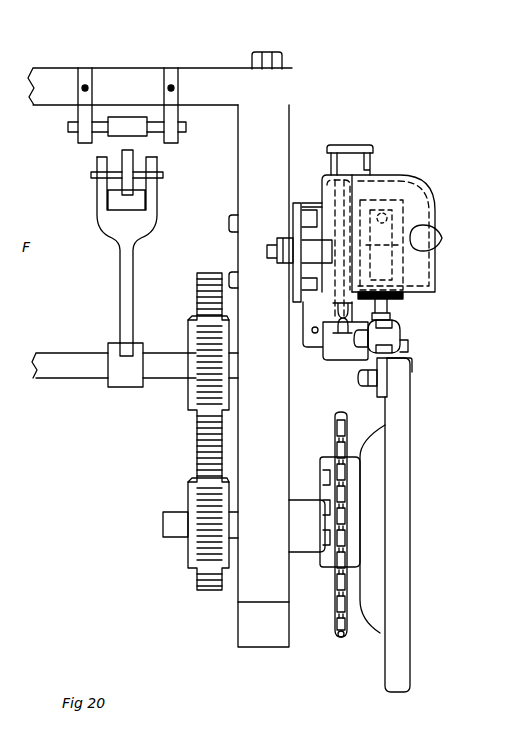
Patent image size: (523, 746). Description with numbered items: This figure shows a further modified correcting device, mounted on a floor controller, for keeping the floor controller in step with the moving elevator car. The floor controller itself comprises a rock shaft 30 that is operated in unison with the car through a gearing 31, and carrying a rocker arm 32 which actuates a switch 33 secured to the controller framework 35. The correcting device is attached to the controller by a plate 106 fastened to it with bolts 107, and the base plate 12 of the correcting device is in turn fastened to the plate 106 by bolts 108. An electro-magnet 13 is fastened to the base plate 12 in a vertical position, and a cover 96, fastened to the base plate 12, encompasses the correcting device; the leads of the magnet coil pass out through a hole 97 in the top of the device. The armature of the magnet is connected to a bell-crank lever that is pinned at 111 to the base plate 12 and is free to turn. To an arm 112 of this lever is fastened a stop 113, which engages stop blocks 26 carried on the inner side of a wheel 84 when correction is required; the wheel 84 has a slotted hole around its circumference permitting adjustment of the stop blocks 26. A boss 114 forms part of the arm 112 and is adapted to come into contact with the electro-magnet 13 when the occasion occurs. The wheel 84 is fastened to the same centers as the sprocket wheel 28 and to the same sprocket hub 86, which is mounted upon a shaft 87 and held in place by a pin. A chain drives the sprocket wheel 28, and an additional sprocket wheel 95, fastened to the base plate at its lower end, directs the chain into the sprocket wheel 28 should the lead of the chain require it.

The controller framework 35 is at (138, 82).
The switch 33 is at (139, 105).
The rocker arm 32 is at (130, 255).
The rock shaft 30 is at (80, 370).
The gearing 31 is at (194, 437).
The shaft 87 is at (172, 532).
The bolts 107 is at (229, 278).
The plate 106 is at (297, 290).
The bolts 108 is at (273, 264).
The base plate 12 is at (337, 205).
The hole 97 is at (355, 148).
The cover 96 is at (425, 212).
The electro-magnet 13 is at (405, 296).
The boss 114 is at (391, 306).
The arm 112 is at (401, 334).
The pin 111 is at (410, 346).
The stop 113 is at (412, 363).
The stop blocks 26 is at (383, 378).
The wheel 84 is at (397, 553).
The sprocket wheel 95 is at (343, 362).
The sprocket hub 86 is at (322, 482).
The sprocket wheel 28 is at (339, 641).